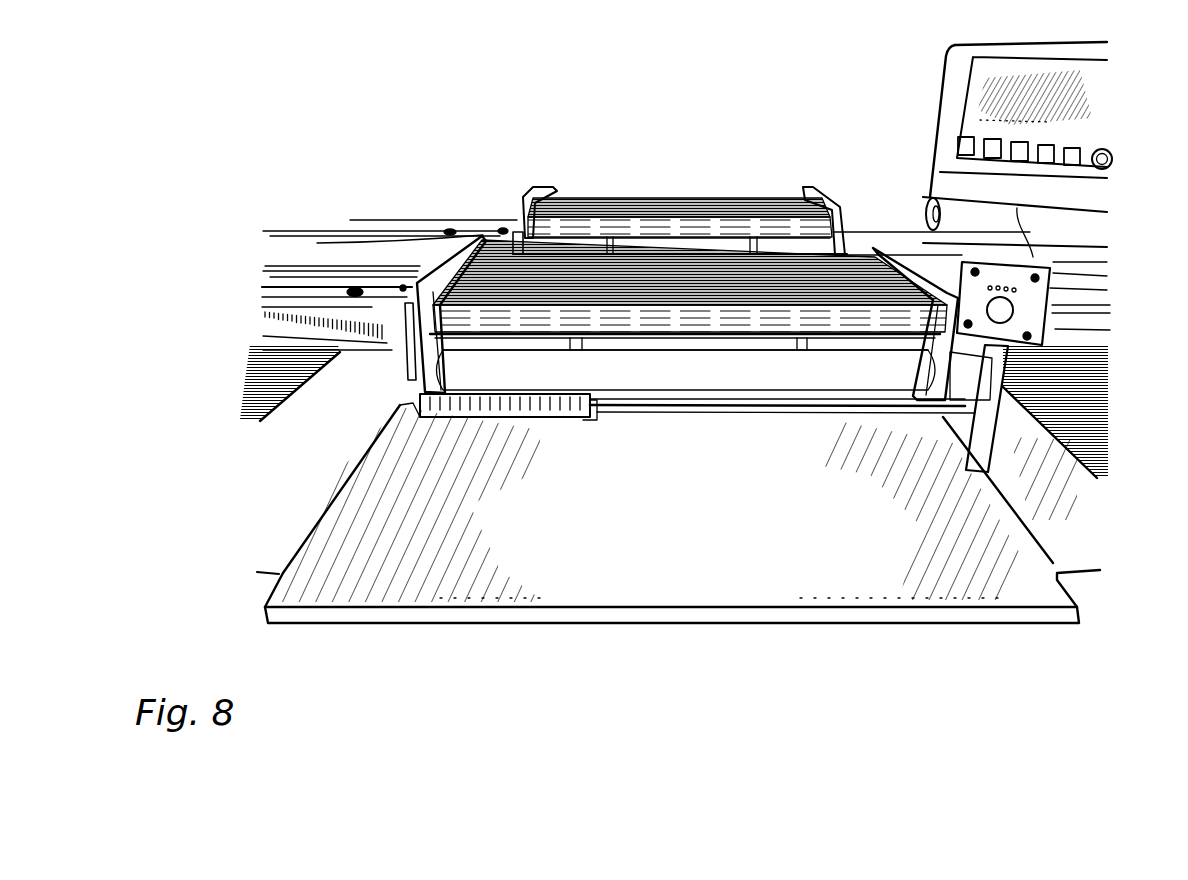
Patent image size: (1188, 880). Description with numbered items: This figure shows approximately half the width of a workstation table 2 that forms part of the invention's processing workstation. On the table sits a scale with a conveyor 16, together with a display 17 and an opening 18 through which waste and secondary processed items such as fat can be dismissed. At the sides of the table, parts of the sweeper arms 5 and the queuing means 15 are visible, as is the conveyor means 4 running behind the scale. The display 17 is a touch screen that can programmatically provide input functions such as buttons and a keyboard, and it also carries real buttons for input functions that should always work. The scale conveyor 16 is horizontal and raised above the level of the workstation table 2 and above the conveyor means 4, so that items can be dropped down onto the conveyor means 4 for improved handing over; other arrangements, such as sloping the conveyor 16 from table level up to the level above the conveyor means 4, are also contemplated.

The workstation table 2 is at (485, 568).
The conveyor means 4 is at (277, 281).
The sweeper arms 5 is at (277, 249).
The queuing means 15 is at (253, 370).
The conveyor 16 is at (587, 262).
The display 17 is at (1090, 107).
The opening 18 is at (533, 407).